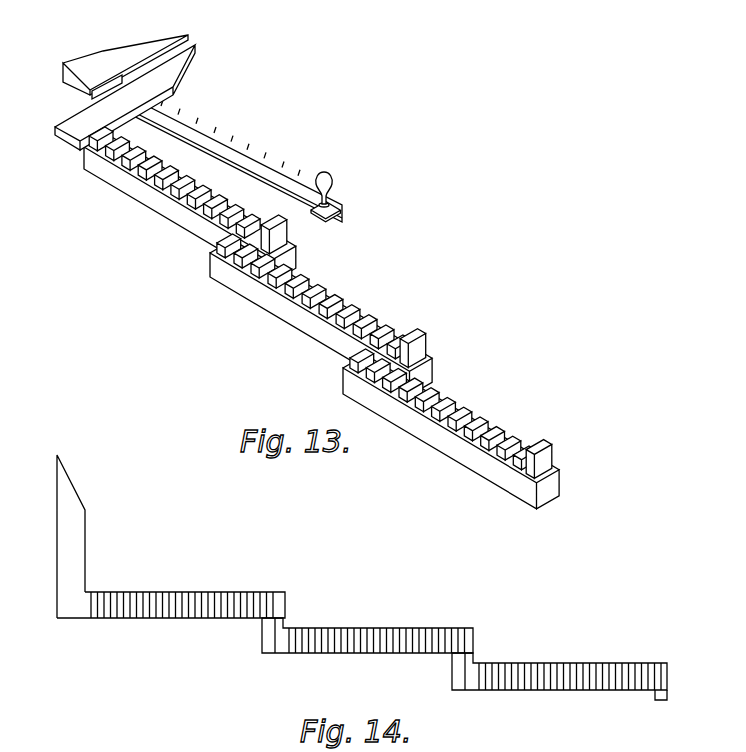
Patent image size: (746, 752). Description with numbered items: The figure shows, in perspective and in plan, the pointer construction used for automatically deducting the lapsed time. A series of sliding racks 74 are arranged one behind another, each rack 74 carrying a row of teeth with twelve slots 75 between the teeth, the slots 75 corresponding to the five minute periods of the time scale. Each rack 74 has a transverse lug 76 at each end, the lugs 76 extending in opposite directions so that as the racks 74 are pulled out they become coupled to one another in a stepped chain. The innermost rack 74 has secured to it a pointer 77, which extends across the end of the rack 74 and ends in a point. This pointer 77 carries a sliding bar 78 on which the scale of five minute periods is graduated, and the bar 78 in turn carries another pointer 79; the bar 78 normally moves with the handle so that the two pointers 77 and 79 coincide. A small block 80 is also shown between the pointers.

In FIG. 13, the sliding rack 74 is at (140, 194).
In FIG. 14, the sliding rack 74 is at (187, 592).
In FIG. 13, the slot 75 is at (205, 180).
In FIG. 14, the slot 75 is at (338, 628).
In FIG. 13, the transverse lug 76 is at (256, 236).
In FIG. 14, the transverse lug 76 is at (475, 655).
In FIG. 13, the pointer 77 is at (181, 74).
In FIG. 14, the pointer 77 is at (72, 500).
In FIG. 13, the sliding bar 78 is at (222, 146).
In FIG. 13, the pointer 79 is at (134, 49).
In FIG. 13, the block 80 is at (90, 95).